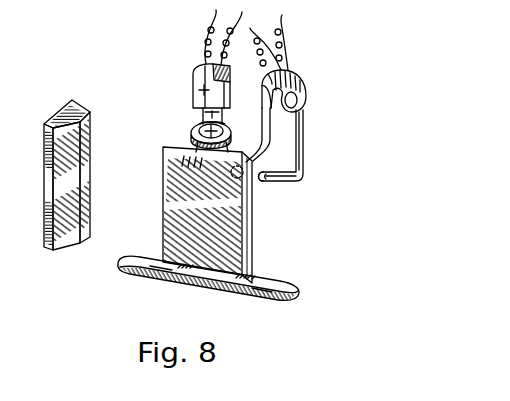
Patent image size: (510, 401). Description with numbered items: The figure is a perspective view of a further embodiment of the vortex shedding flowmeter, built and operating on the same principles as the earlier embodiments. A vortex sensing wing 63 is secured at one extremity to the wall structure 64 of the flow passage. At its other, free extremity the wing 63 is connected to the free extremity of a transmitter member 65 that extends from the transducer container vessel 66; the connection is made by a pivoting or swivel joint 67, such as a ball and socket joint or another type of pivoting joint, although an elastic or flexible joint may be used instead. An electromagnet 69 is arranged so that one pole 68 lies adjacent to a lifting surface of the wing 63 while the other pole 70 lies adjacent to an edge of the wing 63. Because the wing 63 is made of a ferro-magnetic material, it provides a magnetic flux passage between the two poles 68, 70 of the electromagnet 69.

The vortex sensing wing 63 is at (228, 215).
The wall structure 64 is at (266, 292).
The transmitter member 65 is at (198, 106).
The transducer container vessel 66 is at (193, 70).
The pivoting or swivel joint 67 is at (190, 132).
The one pole 68 is at (257, 165).
The electromagnet 69 is at (303, 90).
The other pole 70 is at (268, 183).